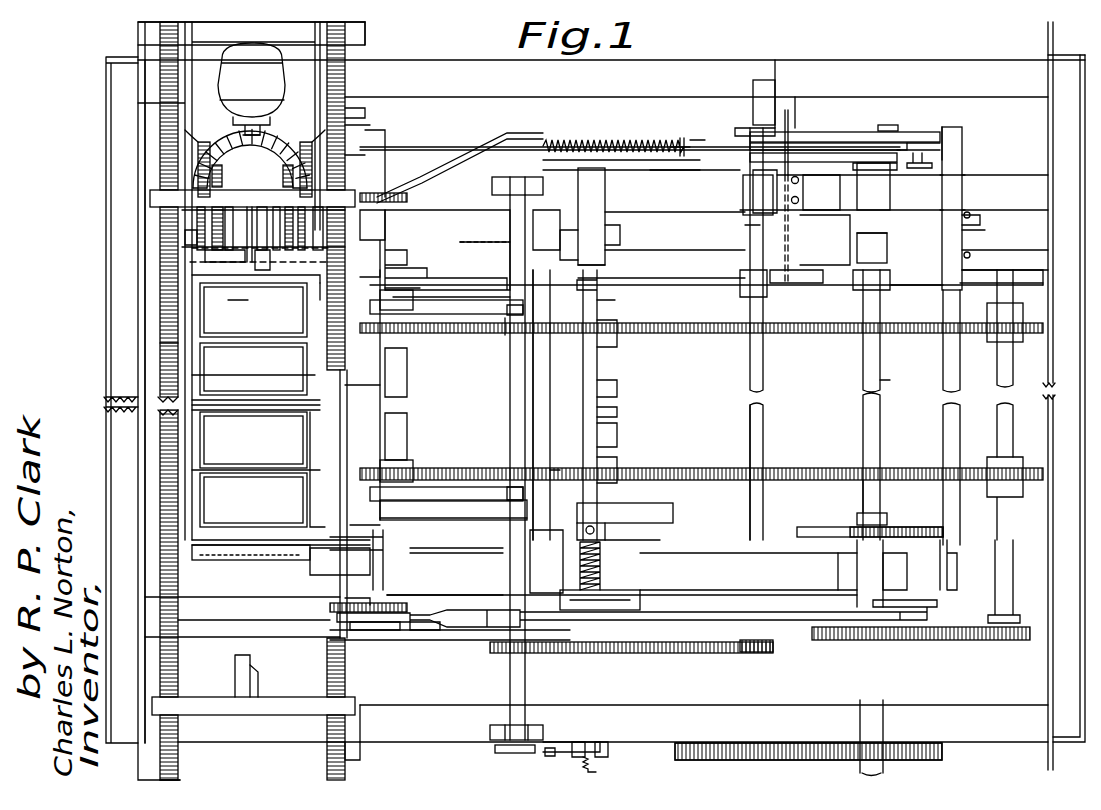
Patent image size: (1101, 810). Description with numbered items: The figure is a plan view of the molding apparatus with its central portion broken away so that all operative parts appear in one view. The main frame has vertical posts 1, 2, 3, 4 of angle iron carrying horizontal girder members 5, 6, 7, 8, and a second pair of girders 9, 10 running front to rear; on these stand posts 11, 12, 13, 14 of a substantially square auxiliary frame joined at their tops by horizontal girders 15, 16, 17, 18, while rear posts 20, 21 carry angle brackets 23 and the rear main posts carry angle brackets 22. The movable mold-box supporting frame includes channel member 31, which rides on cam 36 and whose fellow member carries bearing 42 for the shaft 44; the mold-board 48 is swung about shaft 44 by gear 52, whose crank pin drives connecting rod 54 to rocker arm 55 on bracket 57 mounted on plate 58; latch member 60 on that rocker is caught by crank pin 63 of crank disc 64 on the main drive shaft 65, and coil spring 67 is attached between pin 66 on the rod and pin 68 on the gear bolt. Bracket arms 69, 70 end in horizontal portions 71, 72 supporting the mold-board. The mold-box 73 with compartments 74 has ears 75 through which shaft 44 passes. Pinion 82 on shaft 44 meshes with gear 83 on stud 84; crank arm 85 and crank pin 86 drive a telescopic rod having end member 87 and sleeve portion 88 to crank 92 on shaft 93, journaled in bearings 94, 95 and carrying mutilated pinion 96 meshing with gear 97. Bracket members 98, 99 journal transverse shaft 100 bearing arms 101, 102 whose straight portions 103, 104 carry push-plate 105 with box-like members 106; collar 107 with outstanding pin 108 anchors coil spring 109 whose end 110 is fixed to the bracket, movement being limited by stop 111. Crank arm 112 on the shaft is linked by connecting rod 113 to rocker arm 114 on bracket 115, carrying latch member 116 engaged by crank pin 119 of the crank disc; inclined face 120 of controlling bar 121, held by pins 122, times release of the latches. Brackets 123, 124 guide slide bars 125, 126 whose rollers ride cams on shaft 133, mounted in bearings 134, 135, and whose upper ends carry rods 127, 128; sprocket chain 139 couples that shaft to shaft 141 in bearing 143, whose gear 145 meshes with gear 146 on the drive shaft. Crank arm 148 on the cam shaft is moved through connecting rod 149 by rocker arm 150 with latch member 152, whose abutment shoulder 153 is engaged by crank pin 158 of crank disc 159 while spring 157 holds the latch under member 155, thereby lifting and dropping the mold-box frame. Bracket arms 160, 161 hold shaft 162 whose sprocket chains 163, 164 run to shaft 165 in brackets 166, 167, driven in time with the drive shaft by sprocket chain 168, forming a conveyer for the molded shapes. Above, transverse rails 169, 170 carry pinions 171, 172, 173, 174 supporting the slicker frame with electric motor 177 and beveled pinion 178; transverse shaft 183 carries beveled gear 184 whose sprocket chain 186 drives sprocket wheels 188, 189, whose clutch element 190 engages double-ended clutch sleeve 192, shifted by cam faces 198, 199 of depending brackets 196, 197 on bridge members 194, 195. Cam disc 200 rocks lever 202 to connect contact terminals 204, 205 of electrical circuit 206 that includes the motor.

The frame base 1 is at (125, 746).
The frame side 2 is at (1060, 748).
The frame upright 3 is at (1054, 30).
The frame plate 4 is at (137, 30).
The base rail 5 is at (1011, 744).
The top rail 6 is at (980, 64).
The frame wall 7 is at (120, 212).
The cross bar 8 is at (968, 273).
The bracket 9 is at (210, 620).
The cross bar 10 is at (1016, 178).
The vertical shaft 11 is at (510, 575).
The post 12 is at (968, 548).
The bar 13 is at (966, 230).
The post 14 is at (572, 208).
The post 15 is at (725, 548).
The cross bar 16 is at (710, 250).
The cam post 17 is at (542, 368).
The bar 18 is at (946, 383).
The plate 20 is at (385, 722).
The top plate 21 is at (366, 28).
The foot 22 is at (172, 768).
The foot 23 is at (340, 762).
The gear 31 is at (342, 386).
The block 36 is at (406, 578).
The bracket 42 is at (350, 570).
The box 44 is at (325, 438).
The box 48 is at (215, 530).
The inclined bar 52 is at (400, 190).
The rod 54 is at (548, 133).
The block 55 is at (745, 128).
The block 57 is at (762, 90).
The plate 58 is at (782, 72).
The bar 60 is at (830, 137).
The block 63 is at (886, 125).
The bar 64 is at (906, 145).
The post 65 is at (882, 186).
The pin 66 is at (698, 140).
The spring 67 is at (616, 140).
The bracket 68 is at (347, 160).
The block 69 is at (386, 583).
The link 70 is at (262, 262).
The plate 71 is at (218, 558).
The box 72 is at (225, 280).
The plate 73 is at (215, 423).
The plate 74 is at (210, 370).
The bracket 75 is at (325, 518).
The gear 82 is at (330, 606).
The bracket 83 is at (372, 622).
The plate 84 is at (267, 597).
The block 85 is at (400, 645).
The gear 86 is at (800, 640).
The collar 87 is at (446, 624).
The shaft 88 is at (500, 623).
The bar 92 is at (922, 602).
The shaft 93 is at (857, 495).
The bar 94 is at (834, 575).
The block 95 is at (882, 230).
The collar 96 is at (882, 518).
The rack 97 is at (900, 528).
The block 98 is at (640, 600).
The bar 99 is at (622, 230).
The cam 100 is at (606, 360).
The block 101 is at (632, 510).
The bar 102 is at (632, 312).
The cam 103 is at (618, 490).
The bar 104 is at (655, 258).
The cam 105 is at (604, 432).
The cam 106 is at (597, 400).
The bar 107 is at (436, 553).
The pivot 108 is at (612, 530).
The lever 109 is at (662, 541).
The spring 110 is at (602, 576).
The block 111 is at (612, 225).
The rod 112 is at (566, 176).
The rod 113 is at (661, 160).
The block 114 is at (722, 183).
The bar 115 is at (736, 230).
The bar 116 is at (846, 165).
The pin 119 is at (932, 160).
The post 120 is at (950, 130).
The post 121 is at (963, 130).
The pin 122 is at (963, 216).
The roller 123 is at (556, 470).
The rod 124 is at (526, 332).
The roller 125 is at (515, 470).
The roller 126 is at (520, 322).
The bar 127 is at (430, 466).
The bar 128 is at (456, 312).
The rail 133 is at (513, 406).
The block 134 is at (578, 720).
The block 135 is at (516, 182).
The rack 139 is at (625, 655).
The bar 141 is at (720, 656).
The bar 143 is at (740, 580).
The gear 145 is at (741, 762).
The gear 146 is at (912, 762).
The block 148 is at (448, 250).
The rack 149 is at (740, 322).
The post 150 is at (792, 292).
The bar 152 is at (985, 293).
The bar 153 is at (904, 296).
The rod 155 is at (786, 228).
The bar 157 is at (982, 270).
The block 158 is at (840, 299).
The block 159 is at (832, 265).
The bar 160 is at (412, 532).
The bracket 161 is at (418, 288).
The post 162 is at (402, 400).
The rack 163 is at (740, 466).
The block 164 is at (718, 336).
The post 165 is at (1000, 415).
The block 166 is at (990, 510).
The post 167 is at (945, 314).
The rack 168 is at (960, 641).
The bracket 169 is at (160, 345).
The rack 170 is at (355, 75).
The block 171 is at (165, 230).
The block 172 is at (388, 246).
The rack 173 is at (160, 38).
The box 174 is at (392, 45).
The bulb 177 is at (251, 89).
The stem 178 is at (235, 135).
The segment 183 is at (232, 182).
The segment 184 is at (198, 120).
The segment 186 is at (208, 158).
The block 188 is at (205, 244).
The link 189 is at (320, 290).
The plate 190 is at (200, 285).
The arch gear 192 is at (242, 215).
The bar 194 is at (235, 710).
The bar 195 is at (150, 197).
The lever 196 is at (252, 677).
The rod 197 is at (262, 215).
The lever 198 is at (245, 660).
The link 199 is at (236, 300).
The block 200 is at (515, 755).
The block 202 is at (560, 757).
The bar 204 is at (625, 722).
The block 205 is at (588, 755).
The spring 206 is at (590, 770).